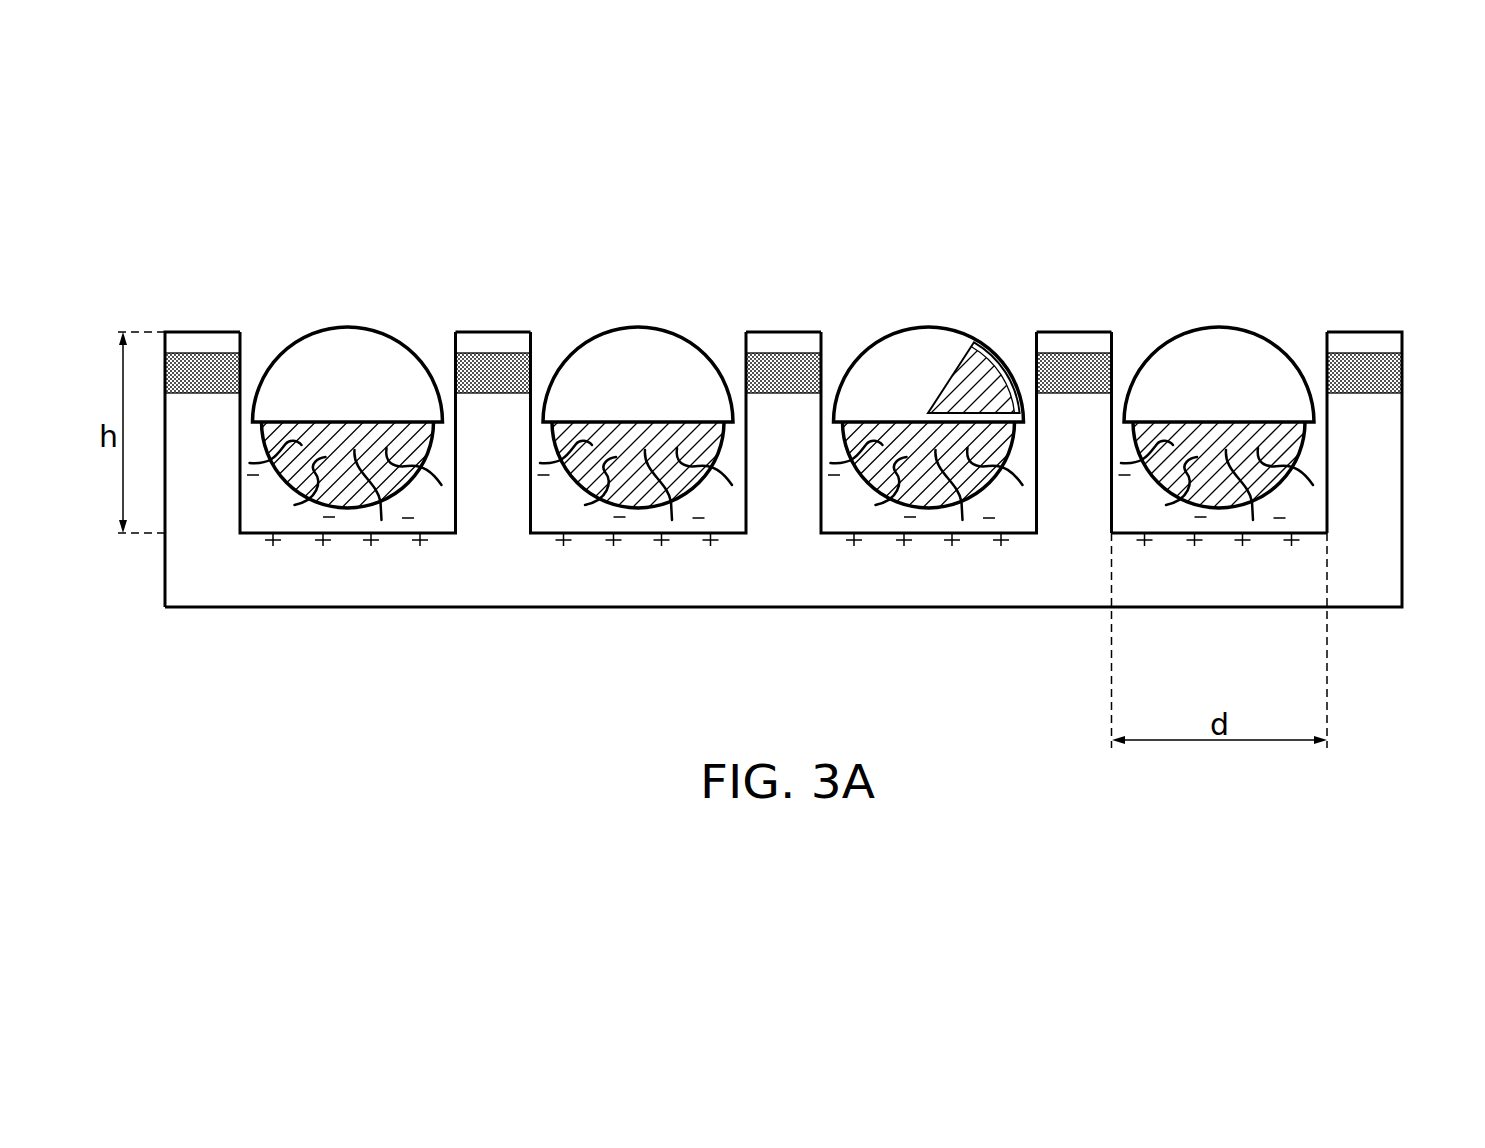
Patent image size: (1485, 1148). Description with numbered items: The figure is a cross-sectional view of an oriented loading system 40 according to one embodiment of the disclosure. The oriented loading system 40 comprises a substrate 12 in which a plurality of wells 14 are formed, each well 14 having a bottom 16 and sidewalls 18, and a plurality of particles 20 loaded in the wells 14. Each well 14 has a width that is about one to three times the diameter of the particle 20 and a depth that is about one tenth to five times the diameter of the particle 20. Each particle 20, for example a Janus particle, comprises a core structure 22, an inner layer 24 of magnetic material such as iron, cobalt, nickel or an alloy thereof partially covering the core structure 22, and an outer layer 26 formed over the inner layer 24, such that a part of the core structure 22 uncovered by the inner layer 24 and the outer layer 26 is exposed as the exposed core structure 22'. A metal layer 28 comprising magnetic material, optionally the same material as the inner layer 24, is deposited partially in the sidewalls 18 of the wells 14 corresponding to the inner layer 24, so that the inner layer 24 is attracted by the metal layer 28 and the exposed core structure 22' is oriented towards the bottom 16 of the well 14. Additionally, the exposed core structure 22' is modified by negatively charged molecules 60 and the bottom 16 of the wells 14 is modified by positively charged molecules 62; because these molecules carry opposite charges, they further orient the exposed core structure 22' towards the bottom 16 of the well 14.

The substrate 12 is at (1388, 585).
The well 14 is at (283, 519).
The bottom 16 is at (1311, 527).
The sidewalls 18 is at (1116, 442).
The particle 20 is at (344, 317).
The core structure 22 is at (638, 462).
The exposed core structure 22' is at (1219, 462).
The inner layer 24 is at (1002, 363).
The outer layer 26 is at (905, 347).
The metal layer 28 is at (205, 362).
The oriented loading system 40 is at (1456, 237).
The negatively charged molecules 60 is at (1310, 473).
The positively charged molecules 62 is at (1243, 542).